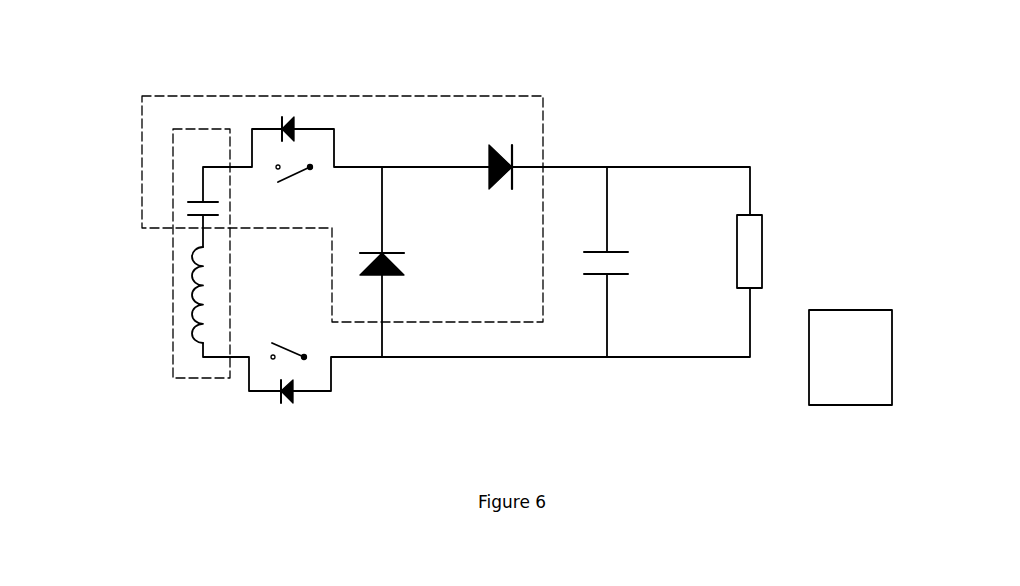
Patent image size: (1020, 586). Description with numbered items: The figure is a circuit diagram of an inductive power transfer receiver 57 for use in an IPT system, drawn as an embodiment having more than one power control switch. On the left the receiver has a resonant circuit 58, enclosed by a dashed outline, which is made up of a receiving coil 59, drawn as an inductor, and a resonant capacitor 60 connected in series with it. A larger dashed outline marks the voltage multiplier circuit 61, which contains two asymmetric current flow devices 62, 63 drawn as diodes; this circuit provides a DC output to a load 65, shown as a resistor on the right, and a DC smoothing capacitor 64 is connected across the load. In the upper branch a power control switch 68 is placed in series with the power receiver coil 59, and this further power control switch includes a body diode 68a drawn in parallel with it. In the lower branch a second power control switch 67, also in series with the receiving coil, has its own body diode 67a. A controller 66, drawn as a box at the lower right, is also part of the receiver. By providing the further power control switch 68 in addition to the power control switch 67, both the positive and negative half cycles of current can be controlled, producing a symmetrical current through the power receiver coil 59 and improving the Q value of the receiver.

The inductive power transfer receiver 57 is at (757, 78).
The resonant circuit 58 is at (200, 128).
The receiving coil 59 is at (190, 314).
The resonant capacitor 60 is at (195, 225).
The voltage multiplier circuit 61 is at (415, 95).
The asymmetric current flow device 62 is at (395, 248).
The asymmetric current flow device 63 is at (505, 143).
The DC smoothing capacitor 64 is at (620, 252).
The load 65 is at (762, 243).
The controller 66 is at (852, 308).
The power control switch 67 is at (307, 358).
The body diode 67a is at (283, 405).
The further power control switch 68 is at (310, 167).
The body diode 68a is at (282, 120).